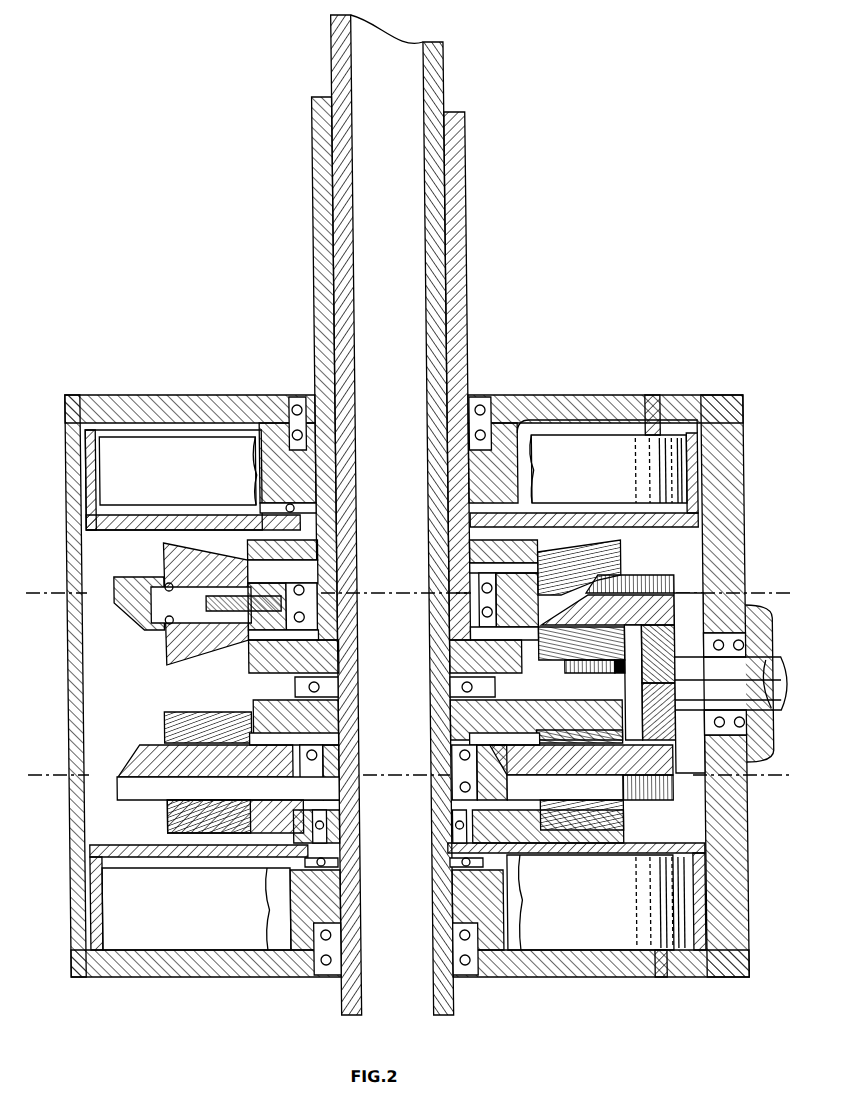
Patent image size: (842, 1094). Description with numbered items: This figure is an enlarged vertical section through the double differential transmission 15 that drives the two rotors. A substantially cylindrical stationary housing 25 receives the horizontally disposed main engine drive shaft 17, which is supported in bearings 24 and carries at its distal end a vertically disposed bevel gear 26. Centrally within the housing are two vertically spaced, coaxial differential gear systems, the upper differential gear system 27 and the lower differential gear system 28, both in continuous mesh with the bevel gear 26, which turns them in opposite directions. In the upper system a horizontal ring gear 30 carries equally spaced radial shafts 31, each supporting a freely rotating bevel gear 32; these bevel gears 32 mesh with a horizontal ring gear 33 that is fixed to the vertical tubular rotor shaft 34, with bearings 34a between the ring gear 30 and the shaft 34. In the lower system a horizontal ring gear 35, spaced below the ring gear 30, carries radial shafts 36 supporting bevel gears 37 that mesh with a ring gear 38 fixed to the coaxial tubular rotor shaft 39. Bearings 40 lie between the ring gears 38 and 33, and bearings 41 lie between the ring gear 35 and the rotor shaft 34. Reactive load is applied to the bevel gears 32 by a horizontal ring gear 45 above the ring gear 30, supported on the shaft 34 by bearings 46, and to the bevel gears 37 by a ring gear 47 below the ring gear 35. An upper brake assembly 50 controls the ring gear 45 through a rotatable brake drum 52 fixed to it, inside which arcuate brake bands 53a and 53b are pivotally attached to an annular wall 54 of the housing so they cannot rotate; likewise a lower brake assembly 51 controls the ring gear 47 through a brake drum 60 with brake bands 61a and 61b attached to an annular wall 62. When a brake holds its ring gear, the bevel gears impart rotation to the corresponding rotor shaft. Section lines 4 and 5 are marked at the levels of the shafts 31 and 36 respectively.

The section line 4- 4 is at (31, 593).
The section line 5- 5 is at (29, 777).
The differential transmission 15 is at (223, 380).
The main engine drive shaft 17 is at (731, 683).
The bearings 24 is at (747, 735).
The stationary housing 25 is at (702, 394).
The bevel gear 26 is at (675, 635).
The upper differential gear system 27 is at (160, 648).
The lower differential gear system 28 is at (156, 818).
The ring gear 30 is at (128, 608).
The shafts 31 is at (262, 620).
The bevel gears 32 is at (270, 572).
The ring gear 33 is at (168, 668).
The tubular rotor shaft 34 is at (470, 214).
The bearings 34a is at (460, 603).
The ring gear 35 is at (143, 752).
The shafts 36 is at (297, 780).
The bevel gears 37 is at (202, 812).
The ring gear 38 is at (220, 715).
The tubular rotor shaft 39 is at (449, 80).
The bearings 40 is at (300, 686).
The bearings 41 is at (442, 755).
The ring gear 45 is at (170, 538).
The bearings 46 is at (470, 548).
The ring gear 47 is at (551, 845).
The upper brake assembly 50 is at (593, 428).
The lower brake assembly 51 is at (219, 945).
The brake drum 52 is at (692, 472).
The brake band 53a is at (680, 490).
The brake band 53b is at (105, 470).
The annular wall 54 is at (656, 394).
The brake drum 60 is at (694, 915).
The brake band 61a is at (562, 960).
The brake band 61b is at (144, 960).
The annular wall 62 is at (652, 978).